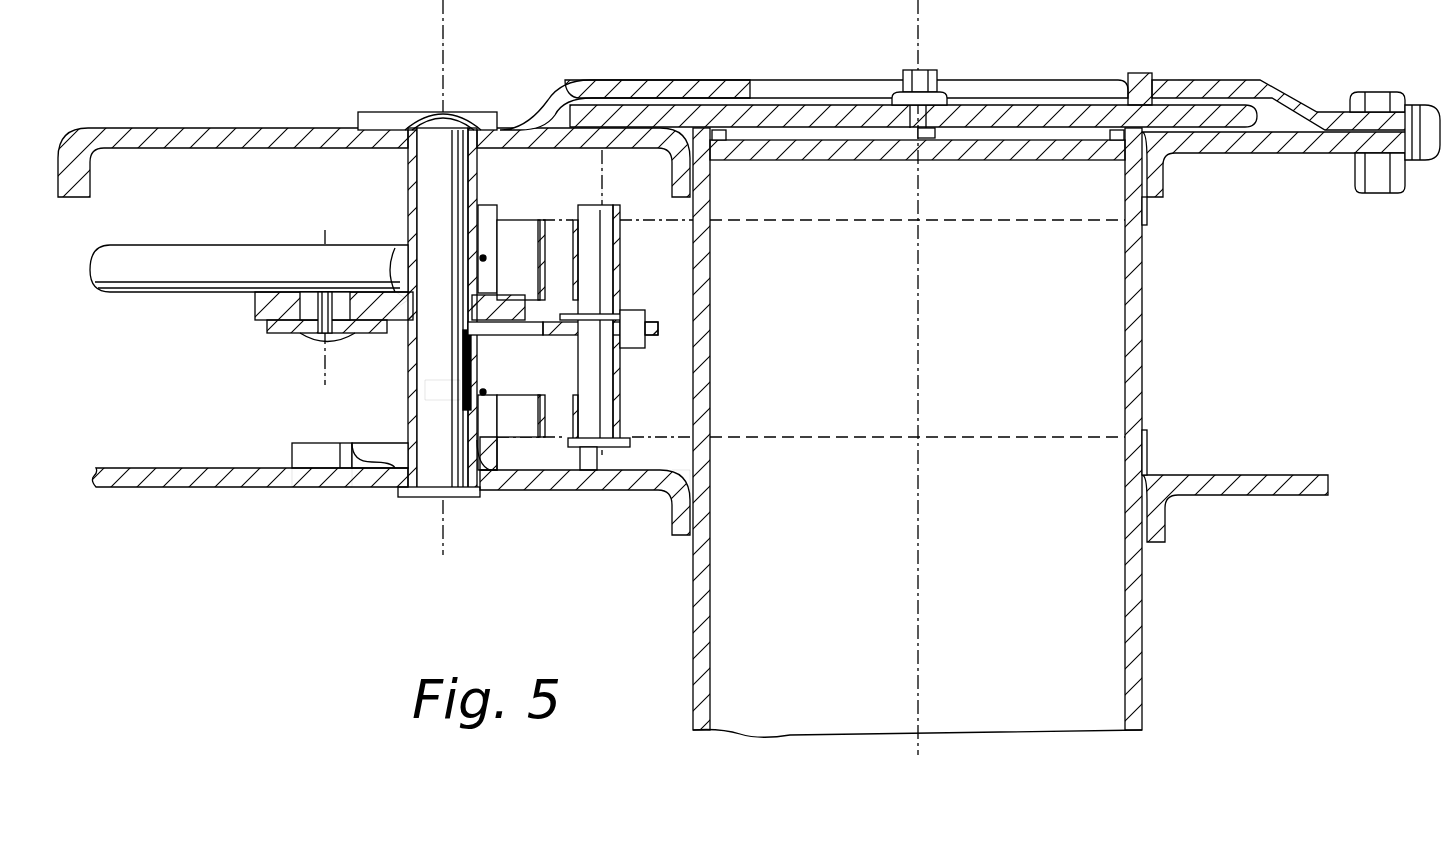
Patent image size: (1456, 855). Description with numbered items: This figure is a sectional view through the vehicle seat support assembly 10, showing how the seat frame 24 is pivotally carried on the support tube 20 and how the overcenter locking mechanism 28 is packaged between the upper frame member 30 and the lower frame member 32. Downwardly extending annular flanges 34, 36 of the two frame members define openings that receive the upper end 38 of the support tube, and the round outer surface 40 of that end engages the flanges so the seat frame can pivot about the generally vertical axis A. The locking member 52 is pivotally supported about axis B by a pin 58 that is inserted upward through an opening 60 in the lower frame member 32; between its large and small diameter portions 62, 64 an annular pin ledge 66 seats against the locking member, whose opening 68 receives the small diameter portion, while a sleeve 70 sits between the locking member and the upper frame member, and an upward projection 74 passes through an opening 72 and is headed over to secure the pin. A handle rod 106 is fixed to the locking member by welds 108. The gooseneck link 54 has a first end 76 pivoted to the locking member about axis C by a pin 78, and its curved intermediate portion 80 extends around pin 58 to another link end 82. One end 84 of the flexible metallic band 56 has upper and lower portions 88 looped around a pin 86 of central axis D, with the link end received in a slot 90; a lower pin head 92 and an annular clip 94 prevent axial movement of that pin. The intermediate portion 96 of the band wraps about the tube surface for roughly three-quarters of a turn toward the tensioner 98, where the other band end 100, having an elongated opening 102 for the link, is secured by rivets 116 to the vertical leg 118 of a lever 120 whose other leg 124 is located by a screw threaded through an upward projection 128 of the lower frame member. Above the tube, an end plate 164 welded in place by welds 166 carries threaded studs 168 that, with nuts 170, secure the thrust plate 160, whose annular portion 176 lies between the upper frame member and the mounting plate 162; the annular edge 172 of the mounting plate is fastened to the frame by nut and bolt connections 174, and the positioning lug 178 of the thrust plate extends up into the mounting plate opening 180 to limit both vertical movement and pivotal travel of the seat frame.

The vehicle seat support assembly 10 is at (325, 565).
The support tube 20 is at (1143, 660).
The seat frame 24 is at (75, 125).
The overcenter locking mechanism 28 is at (240, 393).
The upper frame member 30 is at (210, 128).
The lower frame member 32 is at (222, 487).
The annular flange 34 is at (1165, 190).
The annular flange 36 is at (1165, 533).
The upper end 38 is at (1147, 215).
The round outer surface 40 is at (1147, 445).
The locking member 52 is at (255, 322).
The gooseneck link 54 is at (380, 338).
The flexible metallic band 56 is at (690, 445).
The pin 58 is at (408, 405).
The opening 60 is at (405, 497).
The large diameter portion 62 is at (425, 392).
The small diameter portion 64 is at (455, 170).
The annular pin ledge 66 is at (408, 335).
The opening 68 is at (403, 290).
The sleeve 70 is at (408, 165).
The opening 72 is at (440, 116).
The upward projection 74 is at (455, 120).
The first end 76 is at (290, 333).
The pin 78 is at (315, 300).
The curved intermediate portion 80 is at (508, 338).
The link end 82 is at (642, 325).
The band end 84 is at (693, 393).
The pin 86 is at (600, 262).
The band end portions 88 is at (610, 235).
The slot 90 is at (640, 345).
The pin head 92 is at (585, 475).
The annular clip 94 is at (598, 316).
The intermediate portion 96 is at (1142, 350).
The tensioner 98 is at (492, 472).
The band end 100 is at (515, 230).
The elongated opening 102 is at (522, 310).
The rod 106 is at (176, 262).
The welds 108 is at (392, 278).
The rivets 116 is at (486, 258).
The vertical leg 118 is at (460, 355).
The lever 120 is at (478, 478).
The vertical leg 124 is at (358, 455).
The upward projection 128 is at (312, 470).
The thrust plate 160 is at (995, 95).
The mounting plate 162 is at (1192, 80).
The end plate 164 is at (975, 160).
The welds 166 is at (722, 135).
The threaded studs 168 is at (932, 72).
The nuts 170 is at (895, 95).
The annular edge 172 is at (1430, 105).
The nut and bolt connections 174 is at (1360, 92).
The annular portion 176 is at (600, 105).
The positioning lug 178 is at (1137, 73).
The opening 180 is at (1196, 78).
The vertical axis A is at (920, 55).
The axis B is at (445, 60).
The axis C is at (325, 376).
The central axis D is at (600, 175).